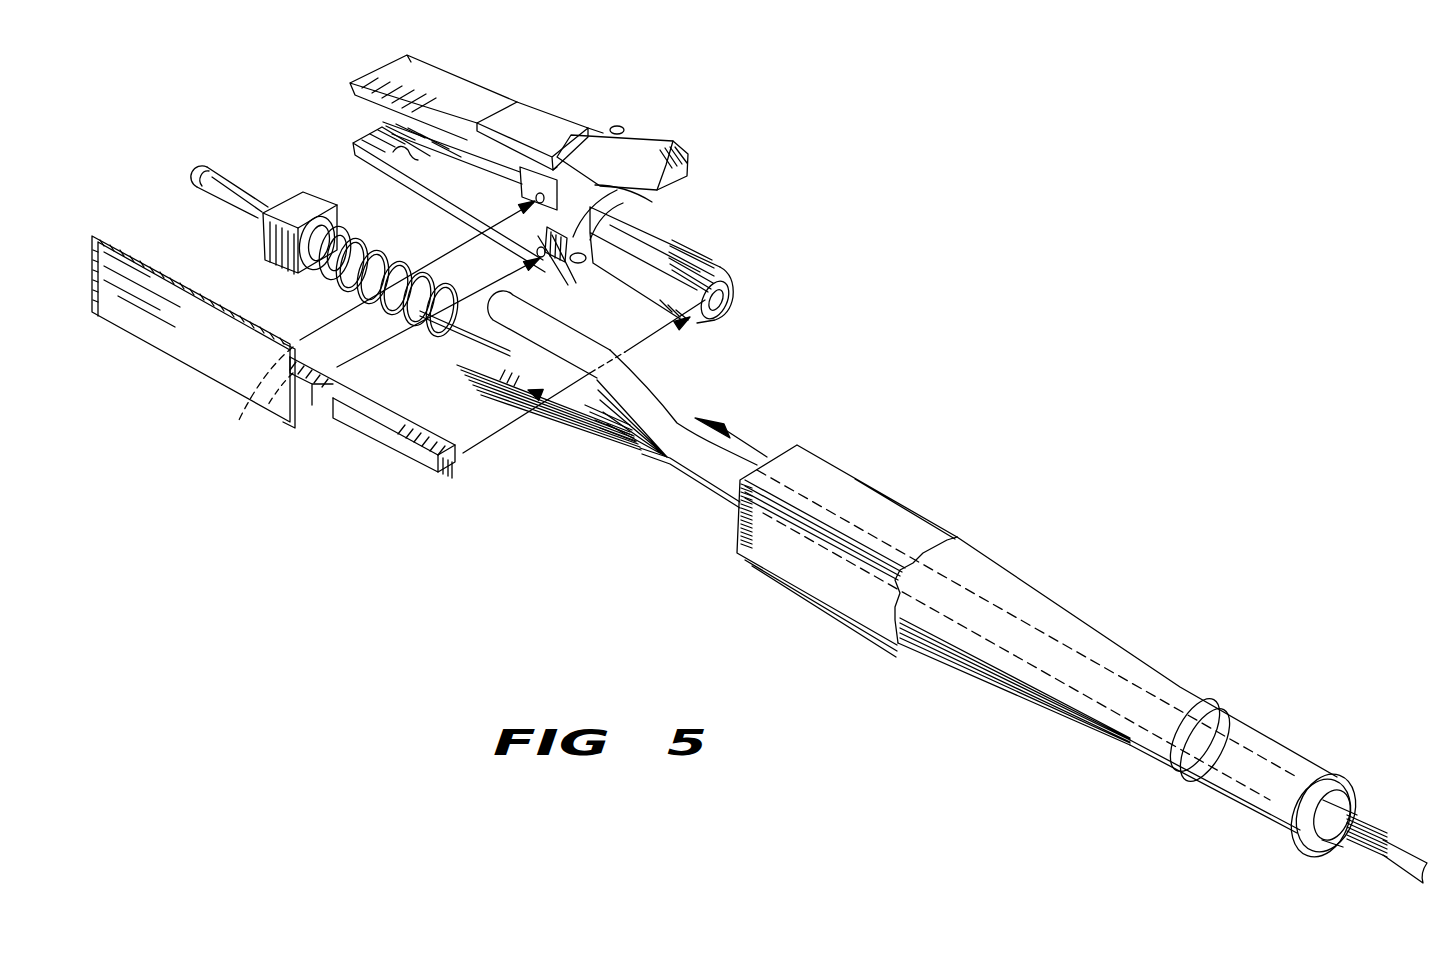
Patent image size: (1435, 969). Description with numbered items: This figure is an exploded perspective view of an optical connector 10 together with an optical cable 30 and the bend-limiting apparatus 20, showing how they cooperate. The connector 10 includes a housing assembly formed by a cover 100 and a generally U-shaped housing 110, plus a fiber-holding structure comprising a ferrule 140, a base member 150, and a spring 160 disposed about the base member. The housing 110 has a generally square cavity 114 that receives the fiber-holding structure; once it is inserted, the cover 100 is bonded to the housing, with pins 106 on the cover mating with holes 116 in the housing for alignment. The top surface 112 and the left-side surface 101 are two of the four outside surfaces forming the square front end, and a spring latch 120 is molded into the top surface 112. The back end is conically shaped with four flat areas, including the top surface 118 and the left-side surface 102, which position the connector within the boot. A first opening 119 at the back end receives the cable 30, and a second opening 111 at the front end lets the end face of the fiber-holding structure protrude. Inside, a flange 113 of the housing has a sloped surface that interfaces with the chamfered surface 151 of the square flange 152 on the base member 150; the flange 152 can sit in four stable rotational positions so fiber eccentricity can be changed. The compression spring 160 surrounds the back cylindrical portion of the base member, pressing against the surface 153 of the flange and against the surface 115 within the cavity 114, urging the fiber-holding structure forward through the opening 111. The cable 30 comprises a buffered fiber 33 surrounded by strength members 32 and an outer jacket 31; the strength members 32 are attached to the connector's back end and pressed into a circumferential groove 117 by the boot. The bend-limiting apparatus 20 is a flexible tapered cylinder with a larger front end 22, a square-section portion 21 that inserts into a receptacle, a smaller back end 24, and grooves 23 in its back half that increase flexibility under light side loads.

The connector 10 is at (850, 352).
The bend-limiting apparatus 20 is at (1082, 640).
The square cross-section portion 21 is at (895, 509).
The front end 22 is at (967, 547).
The grooves 23 is at (1243, 722).
The back end 24 is at (1310, 773).
The optical cable 30 is at (580, 426).
The outer jacket 31 is at (664, 414).
The strength members 32 is at (472, 372).
The buffered fiber 33 is at (455, 350).
The cover 100 is at (272, 363).
The left-side surface 101 is at (222, 374).
The left-side surface 102 is at (392, 437).
The pins 106 is at (240, 418).
The housing 110 is at (557, 191).
The second opening 111 is at (357, 112).
The top surface 112 is at (460, 97).
The flange 113 is at (392, 166).
The cavity 114 is at (440, 192).
The surface 115 is at (512, 250).
The holes 116 is at (570, 277).
The circumferential groove 117 is at (627, 197).
The top surface 118 is at (688, 253).
The first opening 119 is at (722, 316).
The spring latch 120 is at (690, 152).
The ferrule 140 is at (190, 178).
The base member 150 is at (227, 209).
The chamfered surface 151 is at (283, 196).
The flange 152 is at (305, 190).
The surface 153 is at (293, 270).
The spring 160 is at (345, 290).